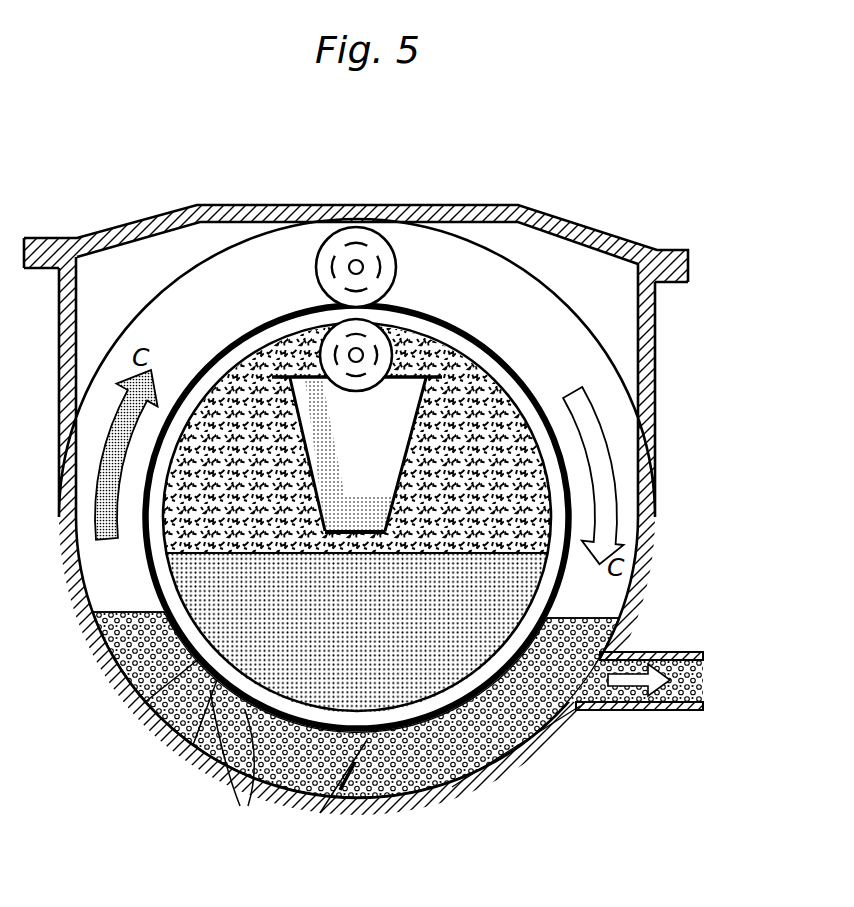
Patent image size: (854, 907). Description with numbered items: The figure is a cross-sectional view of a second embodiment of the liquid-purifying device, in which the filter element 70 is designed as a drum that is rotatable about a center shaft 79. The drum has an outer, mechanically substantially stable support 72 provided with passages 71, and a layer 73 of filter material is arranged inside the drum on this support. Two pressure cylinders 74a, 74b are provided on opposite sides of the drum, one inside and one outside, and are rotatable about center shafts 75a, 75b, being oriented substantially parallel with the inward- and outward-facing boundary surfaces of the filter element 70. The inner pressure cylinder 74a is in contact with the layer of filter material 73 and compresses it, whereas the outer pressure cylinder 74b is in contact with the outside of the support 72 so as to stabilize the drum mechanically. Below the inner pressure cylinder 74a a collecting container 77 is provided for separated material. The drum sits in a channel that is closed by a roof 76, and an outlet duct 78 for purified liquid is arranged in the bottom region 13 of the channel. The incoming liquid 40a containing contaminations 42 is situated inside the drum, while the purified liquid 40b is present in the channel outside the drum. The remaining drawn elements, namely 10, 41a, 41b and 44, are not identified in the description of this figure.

The housing 10 is at (98, 665).
The bottom region 13 is at (486, 781).
The incoming liquid 40a is at (258, 572).
The purified liquid 40b is at (533, 708).
The toner surface level 41a is at (478, 521).
The granule surface level 41b is at (137, 611).
The contaminations 42 is at (430, 677).
The hopper 44 is at (302, 438).
The filter element 70 is at (320, 813).
The passages 71 is at (248, 806).
The support 72 is at (193, 745).
The layer of filter material 73 is at (144, 703).
The inner pressure cylinder 74a is at (397, 342).
The outer pressure cylinder 74b is at (370, 240).
The center shaft 75a is at (354, 349).
The center shaft 75b is at (355, 261).
The roof 76 is at (231, 206).
The collecting container 77 is at (465, 435).
The outlet duct 78 is at (661, 712).
The center shaft 79 is at (400, 523).